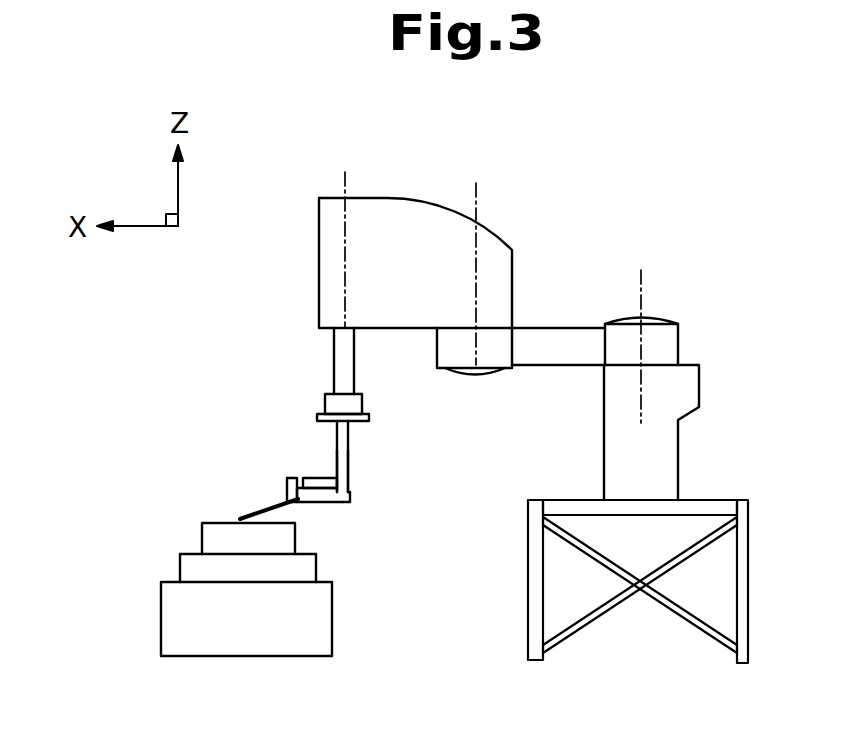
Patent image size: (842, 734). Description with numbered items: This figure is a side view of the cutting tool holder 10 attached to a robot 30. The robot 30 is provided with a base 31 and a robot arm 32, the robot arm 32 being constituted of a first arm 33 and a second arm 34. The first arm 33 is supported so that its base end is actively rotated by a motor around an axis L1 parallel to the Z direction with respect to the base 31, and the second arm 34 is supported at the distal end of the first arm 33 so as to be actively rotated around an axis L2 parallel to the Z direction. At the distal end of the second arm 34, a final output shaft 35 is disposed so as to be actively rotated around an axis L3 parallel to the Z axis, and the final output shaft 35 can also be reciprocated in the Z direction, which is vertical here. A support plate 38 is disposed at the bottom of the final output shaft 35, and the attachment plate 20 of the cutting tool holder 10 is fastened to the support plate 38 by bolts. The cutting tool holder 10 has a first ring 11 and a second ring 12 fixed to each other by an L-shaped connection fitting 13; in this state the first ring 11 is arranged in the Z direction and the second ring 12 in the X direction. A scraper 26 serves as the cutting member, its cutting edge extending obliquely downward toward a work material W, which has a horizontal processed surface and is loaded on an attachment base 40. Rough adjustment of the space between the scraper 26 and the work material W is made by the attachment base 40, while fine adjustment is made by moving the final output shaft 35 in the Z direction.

The robot 30 is at (587, 235).
The base 31 is at (678, 452).
The robot arm 32 is at (428, 395).
The first arm 33 is at (548, 366).
The second arm 34 is at (393, 318).
The final output shaft 35 is at (334, 357).
The support plate 38 is at (317, 417).
The cutting tool holder 10 is at (290, 453).
The attachment plate 20 is at (350, 425).
The first ring 11 is at (349, 460).
The second ring 12 is at (320, 500).
The connection fitting 13 is at (352, 497).
The scraper 26 is at (268, 507).
The attachment base 40 is at (333, 622).
The work material W is at (202, 536).
The axis L1 is at (642, 283).
The axis L2 is at (477, 195).
The axis L3 is at (346, 185).